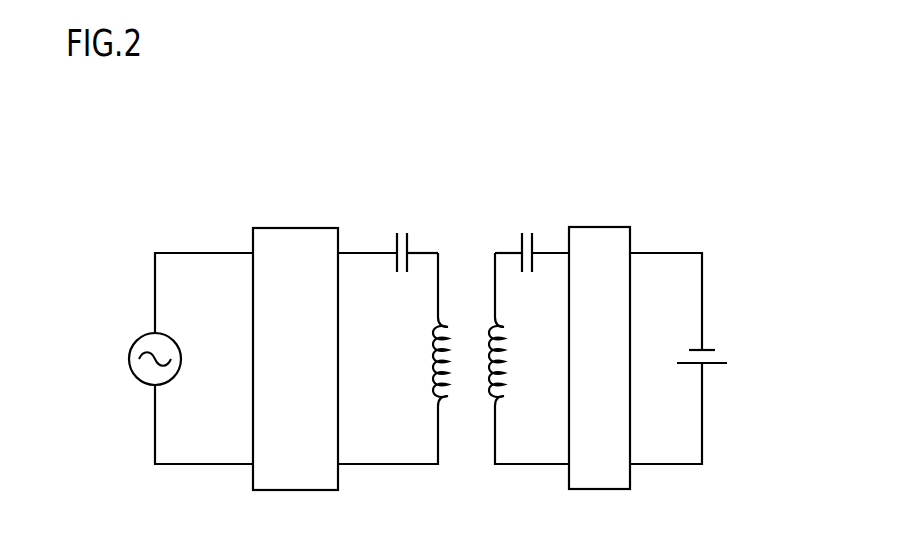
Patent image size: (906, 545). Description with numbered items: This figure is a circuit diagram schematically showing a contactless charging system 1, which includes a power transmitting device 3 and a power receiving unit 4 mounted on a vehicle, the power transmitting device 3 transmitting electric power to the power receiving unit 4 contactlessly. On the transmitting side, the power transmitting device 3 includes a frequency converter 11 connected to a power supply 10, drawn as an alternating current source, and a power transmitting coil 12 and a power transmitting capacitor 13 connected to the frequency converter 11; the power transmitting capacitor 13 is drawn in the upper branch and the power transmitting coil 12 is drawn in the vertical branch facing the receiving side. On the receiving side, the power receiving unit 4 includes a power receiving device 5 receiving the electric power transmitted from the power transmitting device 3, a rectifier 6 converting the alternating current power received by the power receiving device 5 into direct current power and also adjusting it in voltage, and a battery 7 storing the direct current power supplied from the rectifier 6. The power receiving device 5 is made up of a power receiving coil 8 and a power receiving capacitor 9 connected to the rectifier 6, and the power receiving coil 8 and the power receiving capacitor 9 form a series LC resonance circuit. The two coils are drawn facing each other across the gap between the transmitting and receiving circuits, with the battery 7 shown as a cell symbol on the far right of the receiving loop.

The contactless charging system 1 is at (426, 121).
The power transmitting device 3 is at (276, 170).
The power receiving unit 4 is at (513, 138).
The power receiving device 5 is at (487, 170).
The rectifier 6 is at (606, 227).
The battery 7 is at (705, 350).
The power receiving coil 8 is at (490, 340).
The power receiving capacitor 9 is at (533, 245).
The power supply 10 is at (128, 359).
The frequency converter 11 is at (297, 228).
The power transmitting coil 12 is at (450, 335).
The power transmitting capacitor 13 is at (395, 245).